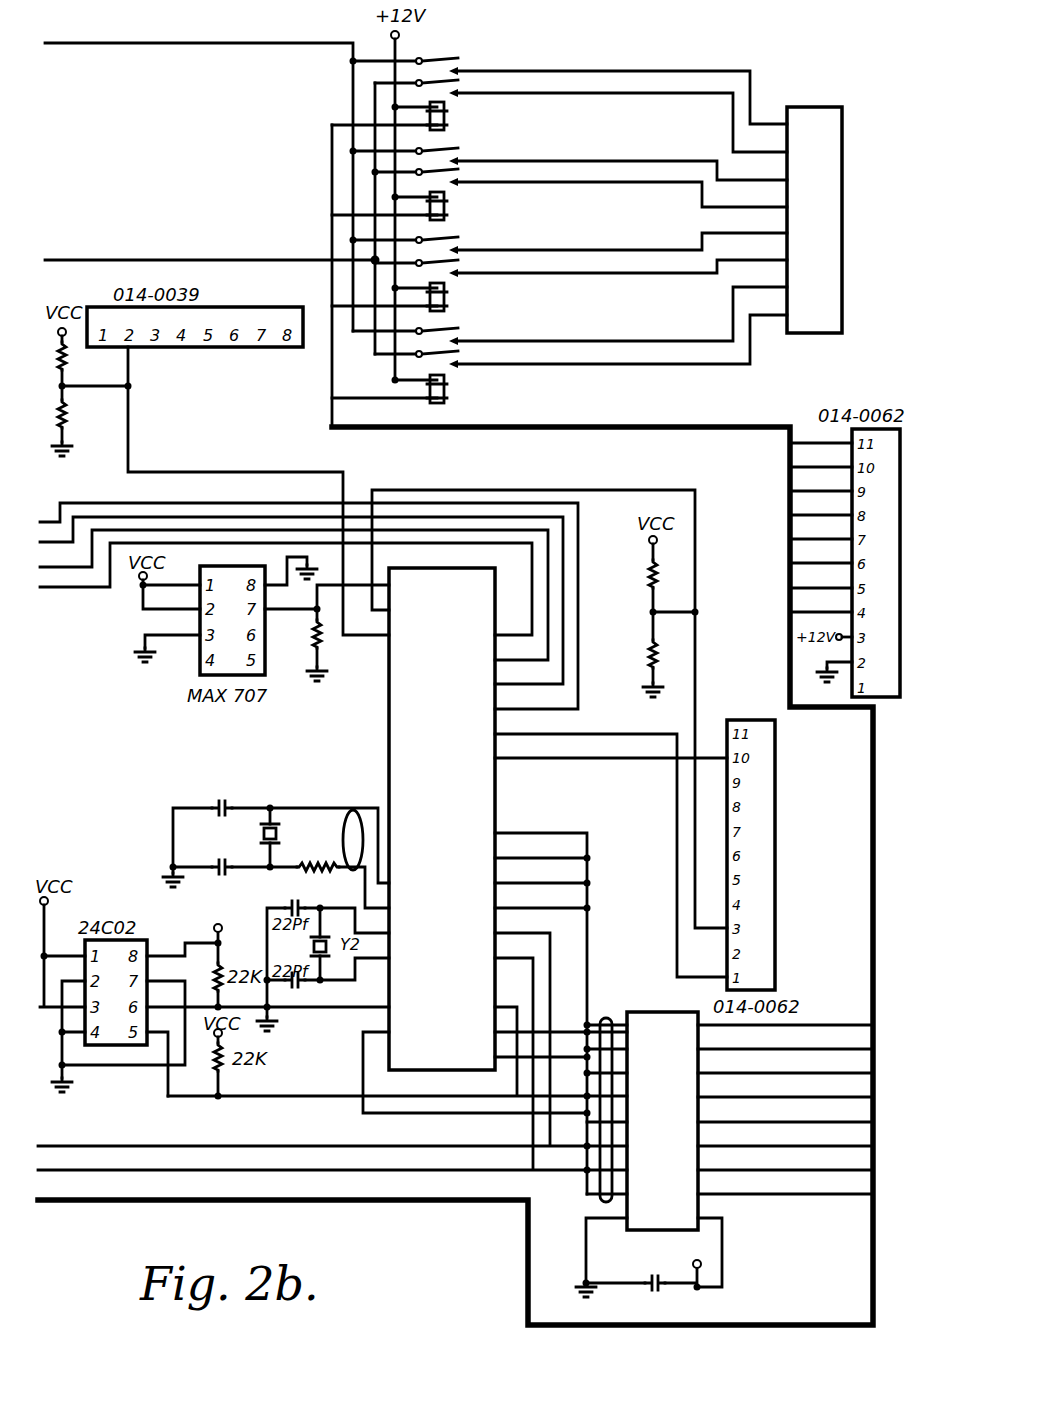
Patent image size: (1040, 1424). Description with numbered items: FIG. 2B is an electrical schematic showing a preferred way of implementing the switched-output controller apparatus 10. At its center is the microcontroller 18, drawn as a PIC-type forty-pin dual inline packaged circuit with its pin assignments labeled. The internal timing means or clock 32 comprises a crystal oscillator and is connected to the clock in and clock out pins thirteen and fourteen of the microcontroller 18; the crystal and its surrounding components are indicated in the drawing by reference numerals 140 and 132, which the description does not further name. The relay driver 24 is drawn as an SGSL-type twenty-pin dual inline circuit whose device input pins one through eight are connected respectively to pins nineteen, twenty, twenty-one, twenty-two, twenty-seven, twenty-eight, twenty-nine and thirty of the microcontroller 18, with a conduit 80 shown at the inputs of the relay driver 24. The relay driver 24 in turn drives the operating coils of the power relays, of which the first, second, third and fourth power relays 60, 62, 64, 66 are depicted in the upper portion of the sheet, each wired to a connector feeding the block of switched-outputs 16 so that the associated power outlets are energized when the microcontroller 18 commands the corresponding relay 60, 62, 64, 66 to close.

The switched-output controller apparatus 10 is at (396, 1226).
The block of switched-outputs 16 is at (836, 86).
The microcontroller 18 is at (497, 784).
The relay driver 24 is at (755, 1222).
The timing means or clock 32 is at (166, 800).
The first power relay 60 is at (460, 58).
The second power relay 62 is at (458, 146).
The third power relay 64 is at (458, 234).
The fourth power relay 66 is at (463, 326).
The conduit 80 is at (600, 1200).
The oscillator shield 132 is at (356, 810).
The crystal 140 is at (276, 820).